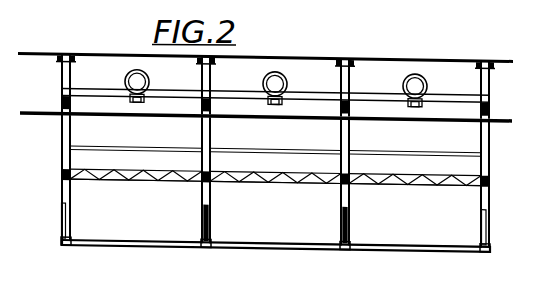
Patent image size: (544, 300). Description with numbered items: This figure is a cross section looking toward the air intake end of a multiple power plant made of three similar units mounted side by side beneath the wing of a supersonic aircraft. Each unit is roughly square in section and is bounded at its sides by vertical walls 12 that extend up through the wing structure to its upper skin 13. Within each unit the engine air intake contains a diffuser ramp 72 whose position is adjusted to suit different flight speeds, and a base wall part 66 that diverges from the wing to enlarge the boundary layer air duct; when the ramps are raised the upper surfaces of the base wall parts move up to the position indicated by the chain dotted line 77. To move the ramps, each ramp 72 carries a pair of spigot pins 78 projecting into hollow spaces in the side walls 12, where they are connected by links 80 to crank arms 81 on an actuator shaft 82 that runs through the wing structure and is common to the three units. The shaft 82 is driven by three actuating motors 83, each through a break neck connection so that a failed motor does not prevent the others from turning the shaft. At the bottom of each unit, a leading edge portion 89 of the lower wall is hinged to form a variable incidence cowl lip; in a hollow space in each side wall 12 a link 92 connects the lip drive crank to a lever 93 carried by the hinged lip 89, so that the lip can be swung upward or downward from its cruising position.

The vertical walls 12 is at (67, 191).
The upper skin 13 is at (389, 52).
The base wall part 66 is at (188, 145).
The ramp 72 is at (137, 179).
The chain dotted line 77 is at (104, 114).
The spigot pins 78 is at (62, 174).
The links 80 is at (70, 138).
The crank arms 81 is at (72, 104).
The actuator shaft 82 is at (303, 92).
The actuating motors 83 is at (141, 80).
The leading edge portion 89 is at (165, 240).
The link 92 is at (67, 214).
The lever 93 is at (62, 239).